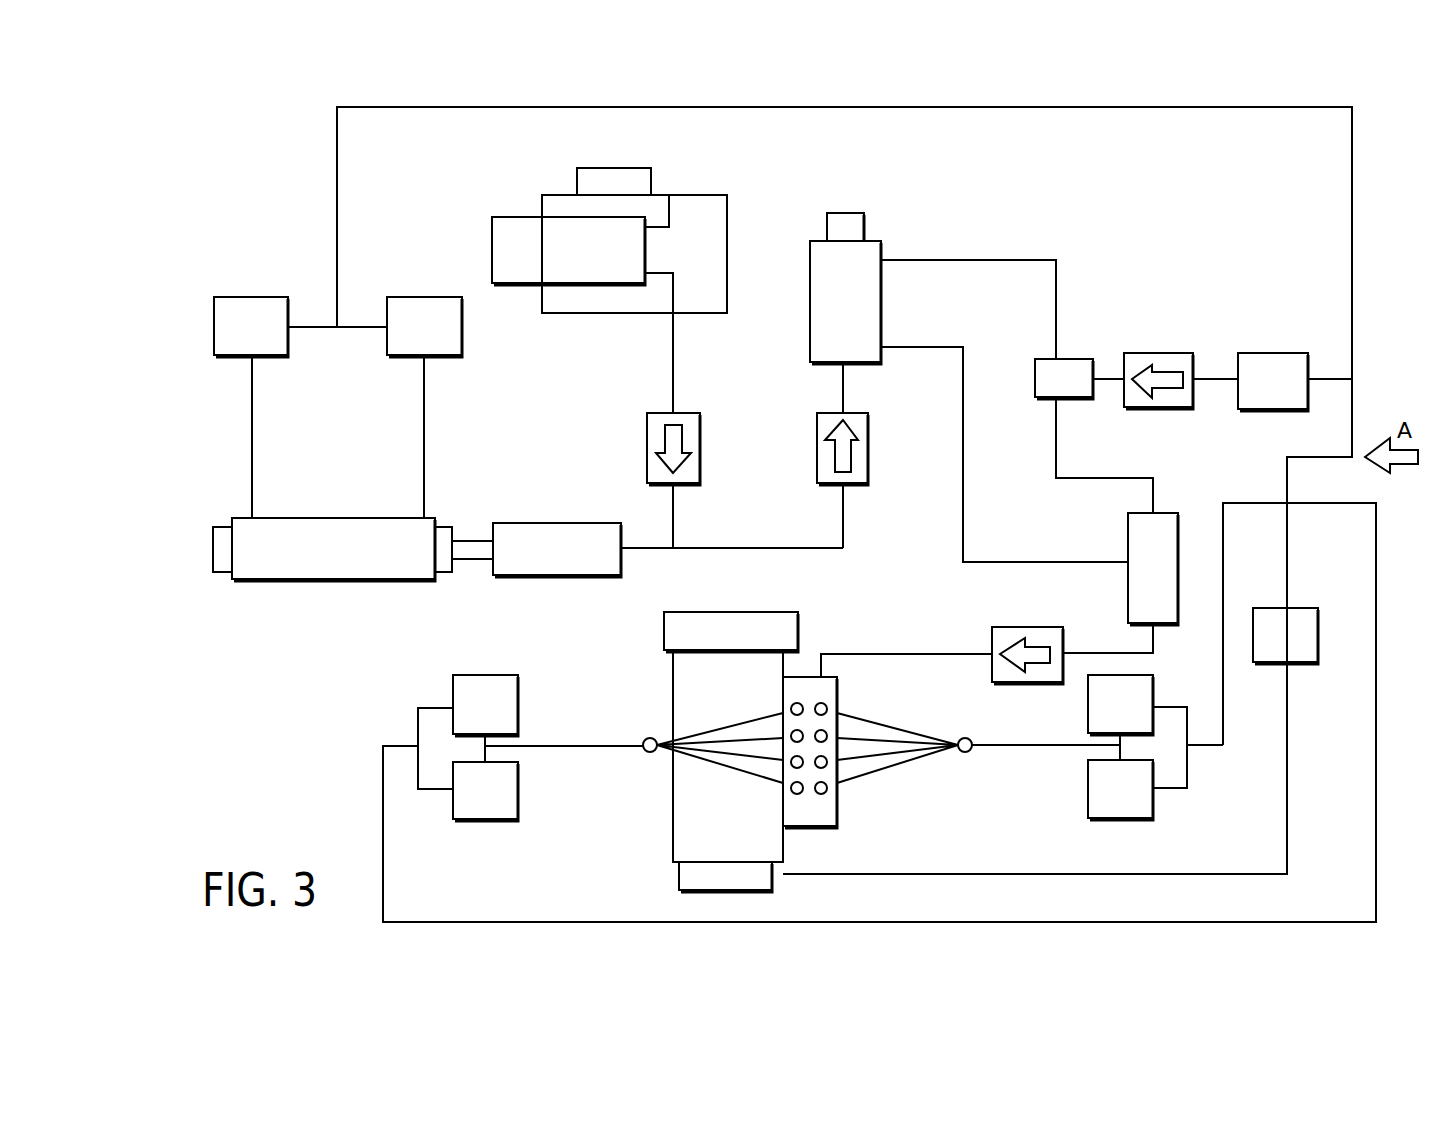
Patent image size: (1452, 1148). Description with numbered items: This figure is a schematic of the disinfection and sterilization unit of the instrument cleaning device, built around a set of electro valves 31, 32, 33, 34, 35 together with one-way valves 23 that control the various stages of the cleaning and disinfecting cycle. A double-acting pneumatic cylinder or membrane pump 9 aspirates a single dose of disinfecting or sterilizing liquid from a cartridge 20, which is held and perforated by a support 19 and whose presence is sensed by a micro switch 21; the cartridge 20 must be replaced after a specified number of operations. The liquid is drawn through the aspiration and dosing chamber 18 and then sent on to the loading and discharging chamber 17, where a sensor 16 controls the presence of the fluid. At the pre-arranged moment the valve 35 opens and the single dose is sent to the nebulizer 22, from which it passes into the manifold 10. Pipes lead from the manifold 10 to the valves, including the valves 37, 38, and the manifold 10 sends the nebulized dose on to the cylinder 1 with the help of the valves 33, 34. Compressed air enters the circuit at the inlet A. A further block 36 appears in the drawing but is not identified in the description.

The cylinder 1 is at (680, 630).
The double-acting pneumatic cylinder or membrane pump 9 is at (320, 565).
The manifold 10 is at (1082, 370).
The sensor 16 is at (843, 225).
The loading and discharging chamber 17 is at (865, 310).
The aspiration and dosing chamber 18 is at (555, 562).
The cartridge support 19 is at (718, 247).
The cartridge 20 is at (510, 240).
The micro switch 21 is at (616, 178).
The nebulizer 22 is at (1140, 593).
The one-way valves 23 is at (1175, 327).
The electro valve 31 is at (430, 318).
The electro valve 32 is at (258, 318).
The electro valve 33 is at (505, 703).
The electro valve 34 is at (500, 798).
The electro valve 35 is at (1276, 365).
The comparator 36 is at (1305, 632).
The valve 37 is at (1100, 712).
The valve 38 is at (1100, 793).